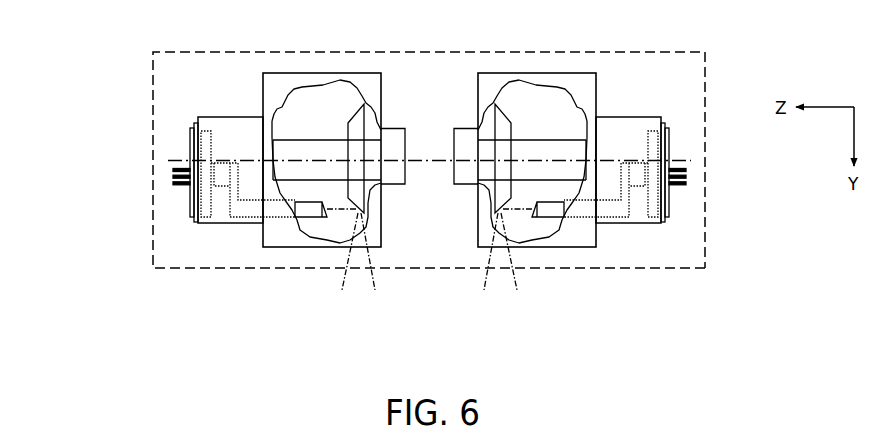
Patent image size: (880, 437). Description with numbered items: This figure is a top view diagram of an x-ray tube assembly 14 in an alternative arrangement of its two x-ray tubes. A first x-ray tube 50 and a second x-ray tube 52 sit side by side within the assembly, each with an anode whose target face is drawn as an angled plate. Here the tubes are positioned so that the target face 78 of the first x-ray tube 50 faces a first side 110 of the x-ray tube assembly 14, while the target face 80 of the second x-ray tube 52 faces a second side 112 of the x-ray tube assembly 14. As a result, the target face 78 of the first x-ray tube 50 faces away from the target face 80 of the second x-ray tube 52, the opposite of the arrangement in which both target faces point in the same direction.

The x-ray tube assembly 14 is at (132, 242).
The first x-ray tube 50 is at (214, 99).
The second x-ray tube 52 is at (624, 99).
The target face 78 is at (347, 137).
The target face 80 is at (512, 137).
The first side 110 is at (138, 143).
The second side 112 is at (716, 258).